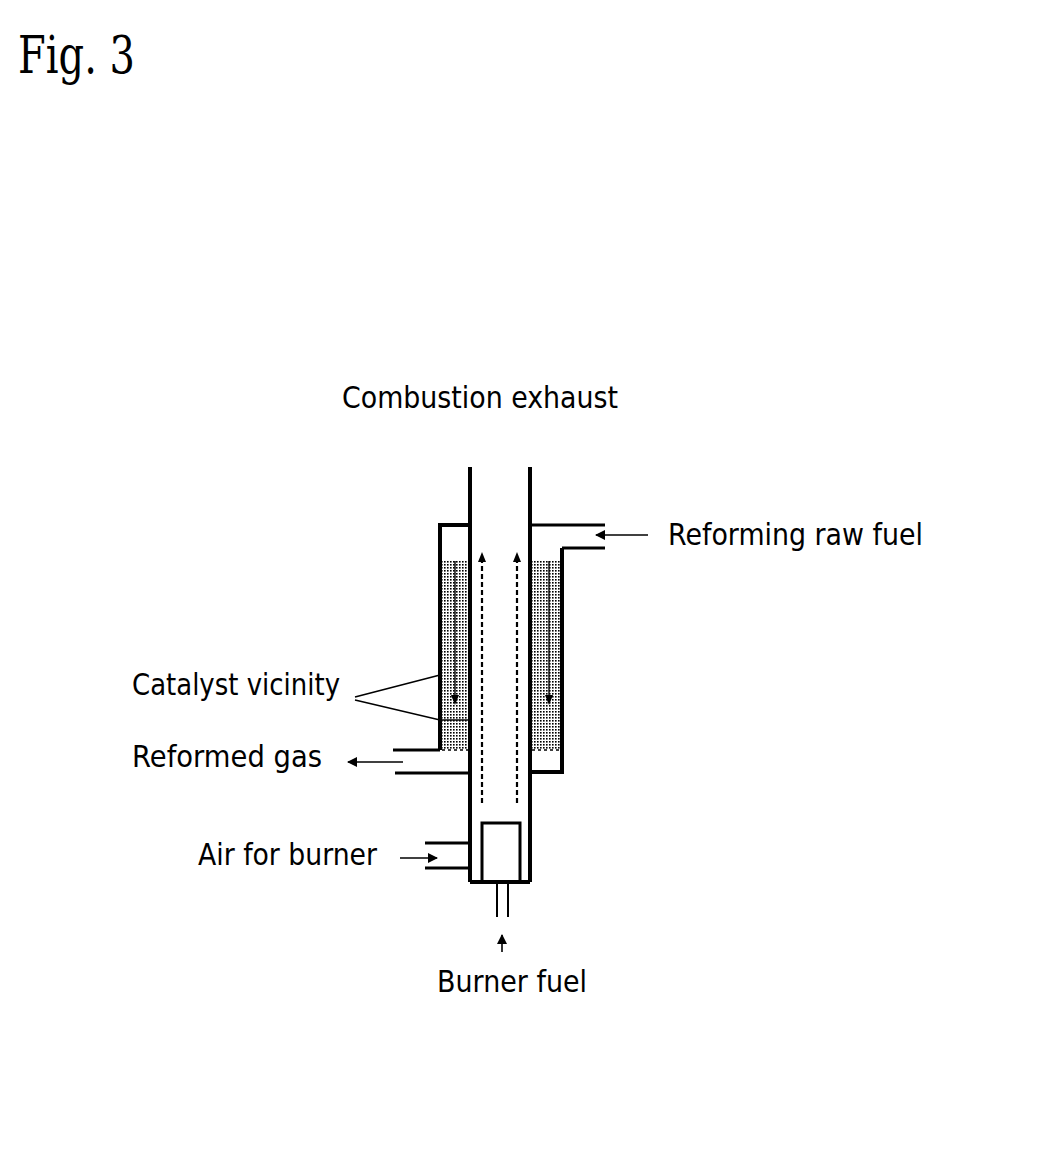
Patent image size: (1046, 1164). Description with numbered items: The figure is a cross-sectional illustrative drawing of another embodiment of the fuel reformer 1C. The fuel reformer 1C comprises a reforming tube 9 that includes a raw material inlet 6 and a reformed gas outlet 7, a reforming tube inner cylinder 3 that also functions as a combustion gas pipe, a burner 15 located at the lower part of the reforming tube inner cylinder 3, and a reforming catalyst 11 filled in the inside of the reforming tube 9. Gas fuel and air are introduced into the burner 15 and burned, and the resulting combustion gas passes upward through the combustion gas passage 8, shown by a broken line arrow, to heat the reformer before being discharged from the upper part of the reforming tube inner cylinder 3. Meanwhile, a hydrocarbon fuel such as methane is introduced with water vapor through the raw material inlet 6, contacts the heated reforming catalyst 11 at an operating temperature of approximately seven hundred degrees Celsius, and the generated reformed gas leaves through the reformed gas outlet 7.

The fuel reformer 1C is at (622, 472).
The reforming tube inner cylinder 3 is at (440, 578).
The raw material inlet 6 is at (547, 521).
The reformed gas outlet 7 is at (450, 774).
The combustion gas passage 8 is at (518, 712).
The reforming tube 9 is at (563, 604).
The reforming catalyst 11 is at (548, 730).
The burner 15 is at (510, 850).